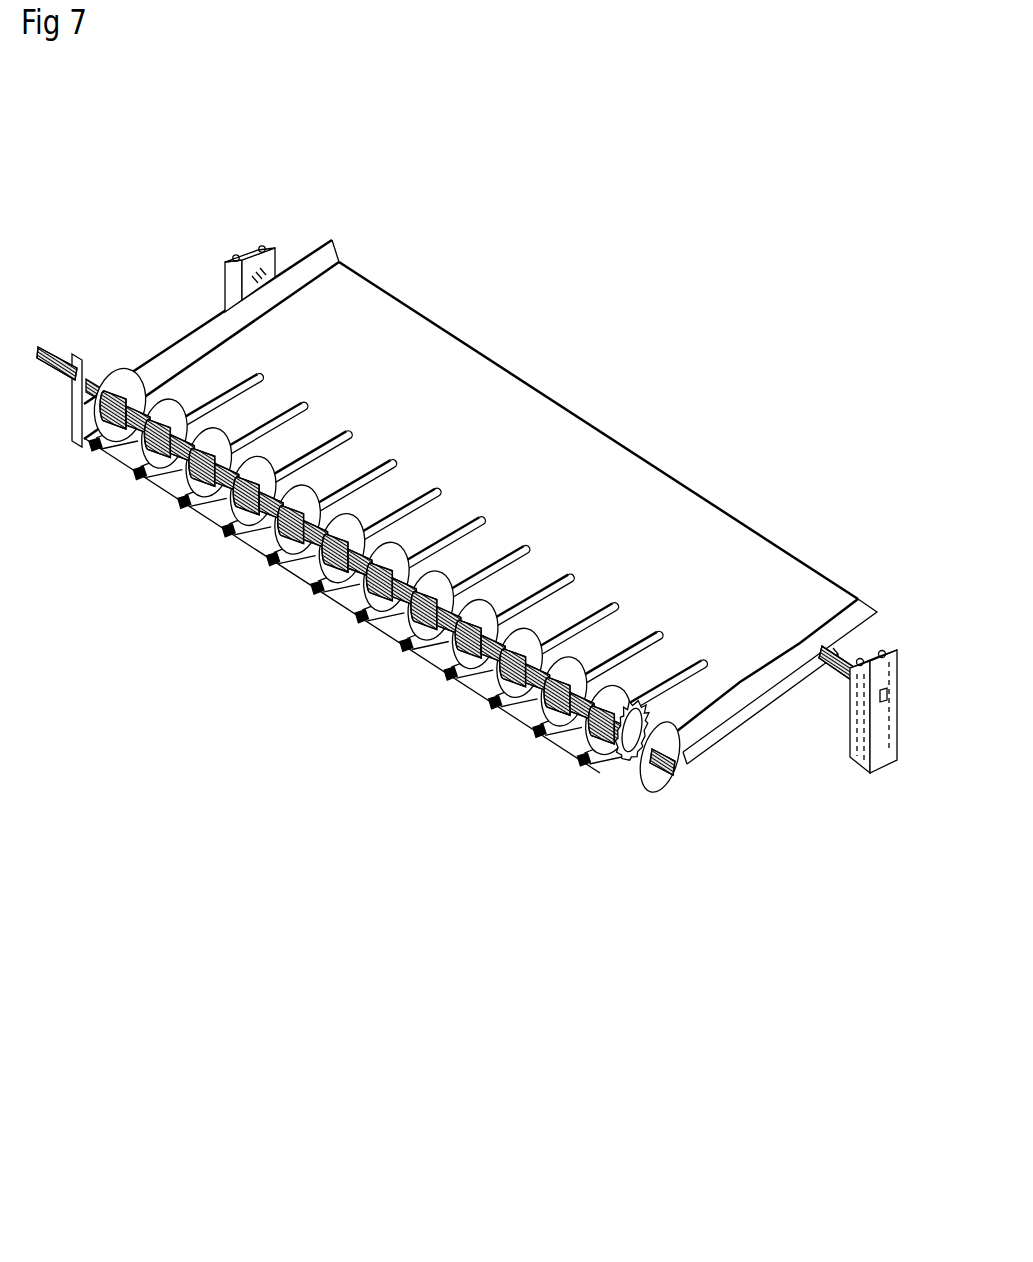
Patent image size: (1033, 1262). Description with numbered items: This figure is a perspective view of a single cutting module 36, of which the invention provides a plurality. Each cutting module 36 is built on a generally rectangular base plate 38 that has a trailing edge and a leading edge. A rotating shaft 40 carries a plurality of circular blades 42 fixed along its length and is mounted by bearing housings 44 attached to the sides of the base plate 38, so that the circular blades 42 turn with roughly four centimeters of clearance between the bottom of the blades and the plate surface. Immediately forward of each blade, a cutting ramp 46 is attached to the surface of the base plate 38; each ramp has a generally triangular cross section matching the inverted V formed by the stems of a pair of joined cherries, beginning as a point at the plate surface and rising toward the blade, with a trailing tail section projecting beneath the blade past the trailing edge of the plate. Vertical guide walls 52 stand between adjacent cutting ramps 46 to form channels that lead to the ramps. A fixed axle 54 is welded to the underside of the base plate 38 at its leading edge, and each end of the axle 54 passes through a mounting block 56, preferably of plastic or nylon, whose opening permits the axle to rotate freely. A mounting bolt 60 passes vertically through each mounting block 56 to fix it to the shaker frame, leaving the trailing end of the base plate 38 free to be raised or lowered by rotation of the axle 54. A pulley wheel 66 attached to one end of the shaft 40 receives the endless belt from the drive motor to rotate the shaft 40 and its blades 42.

The cutting module 36 is at (249, 648).
The base plate 38 is at (357, 357).
The rotating shaft 40 is at (44, 357).
The circular blade 42 is at (490, 688).
The bearing housing 44 is at (607, 778).
The cutting ramp 46 is at (548, 738).
The vertical guide wall 52 is at (563, 578).
The fixed axle 54 is at (835, 668).
The mounting block 56 is at (218, 281).
The mounting bolt 60 is at (259, 248).
The pulley wheel 66 is at (647, 780).